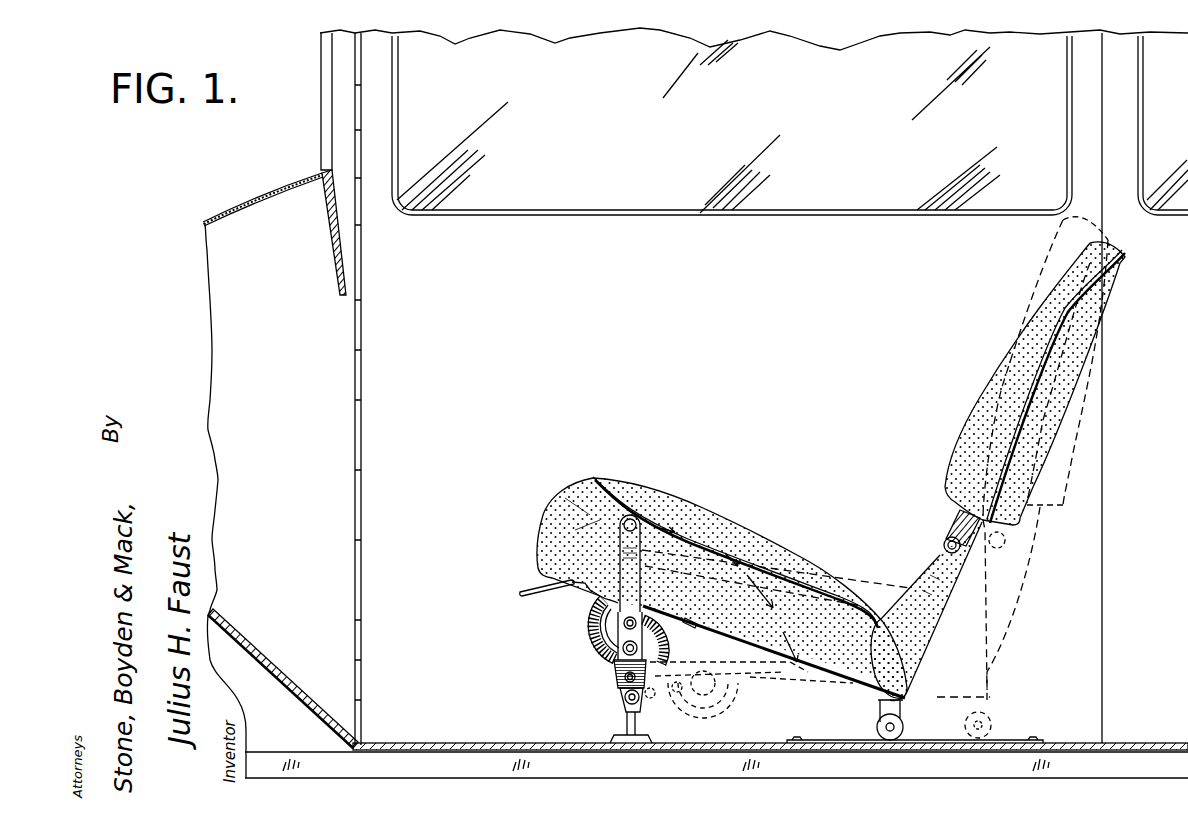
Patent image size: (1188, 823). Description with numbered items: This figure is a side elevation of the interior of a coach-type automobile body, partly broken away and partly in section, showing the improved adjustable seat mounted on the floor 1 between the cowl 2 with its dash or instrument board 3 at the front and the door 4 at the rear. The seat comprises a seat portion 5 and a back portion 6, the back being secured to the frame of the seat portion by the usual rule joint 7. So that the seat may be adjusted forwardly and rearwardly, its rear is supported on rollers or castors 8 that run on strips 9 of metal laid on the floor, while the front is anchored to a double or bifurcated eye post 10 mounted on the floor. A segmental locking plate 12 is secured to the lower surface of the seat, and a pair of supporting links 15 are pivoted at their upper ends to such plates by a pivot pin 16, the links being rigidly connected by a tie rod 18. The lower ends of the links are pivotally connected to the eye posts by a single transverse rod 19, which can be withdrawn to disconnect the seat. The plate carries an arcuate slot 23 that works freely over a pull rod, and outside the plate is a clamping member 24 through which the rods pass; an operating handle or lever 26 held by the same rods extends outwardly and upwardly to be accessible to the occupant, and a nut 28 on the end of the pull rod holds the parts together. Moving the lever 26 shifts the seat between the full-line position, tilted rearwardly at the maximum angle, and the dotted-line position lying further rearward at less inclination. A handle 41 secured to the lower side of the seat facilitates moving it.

The floor 1 is at (436, 743).
The cowl 2 is at (255, 214).
The dash or instrument board 3 is at (340, 272).
The door 4 is at (1085, 577).
The seat portion 5 is at (697, 513).
The back portion 6 is at (980, 397).
The rule joint 7 is at (942, 545).
The rollers or castors 8 is at (885, 712).
The strips 9 is at (1008, 740).
The eye post 10 is at (625, 713).
The segmental locking plate 12 is at (584, 625).
The supporting links 15 is at (660, 663).
The pivot pin 16 is at (648, 612).
The tie rod 18 is at (625, 690).
The rod 19 is at (639, 703).
The arcuate slots 23 is at (603, 632).
The clamping member 24 is at (612, 652).
The operating handle or lever 26 is at (622, 556).
The nut 28 is at (622, 677).
The handle 41 is at (521, 595).